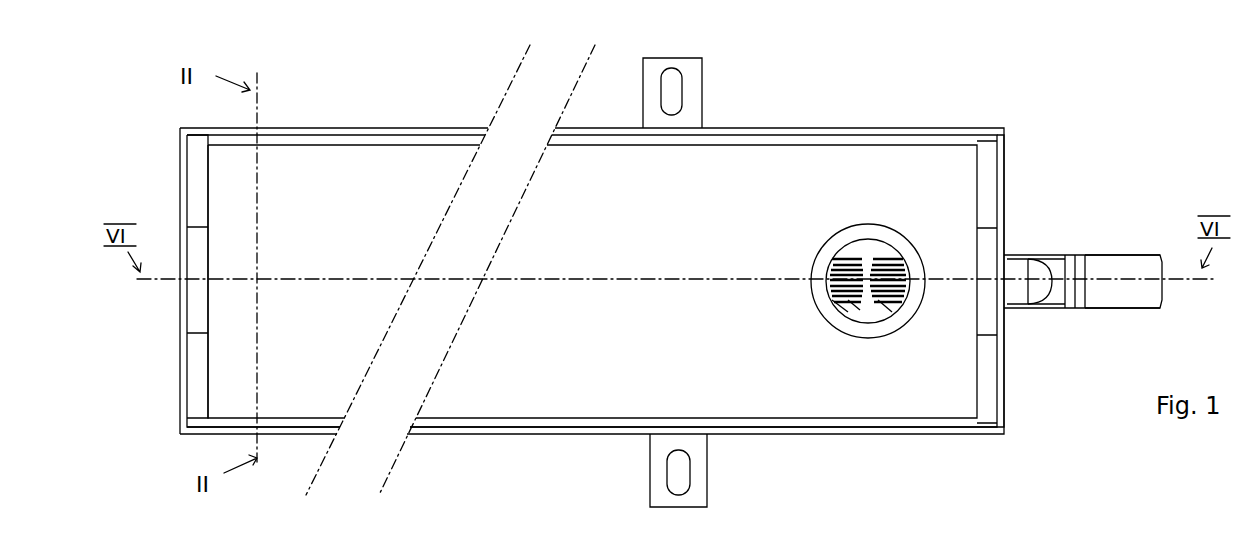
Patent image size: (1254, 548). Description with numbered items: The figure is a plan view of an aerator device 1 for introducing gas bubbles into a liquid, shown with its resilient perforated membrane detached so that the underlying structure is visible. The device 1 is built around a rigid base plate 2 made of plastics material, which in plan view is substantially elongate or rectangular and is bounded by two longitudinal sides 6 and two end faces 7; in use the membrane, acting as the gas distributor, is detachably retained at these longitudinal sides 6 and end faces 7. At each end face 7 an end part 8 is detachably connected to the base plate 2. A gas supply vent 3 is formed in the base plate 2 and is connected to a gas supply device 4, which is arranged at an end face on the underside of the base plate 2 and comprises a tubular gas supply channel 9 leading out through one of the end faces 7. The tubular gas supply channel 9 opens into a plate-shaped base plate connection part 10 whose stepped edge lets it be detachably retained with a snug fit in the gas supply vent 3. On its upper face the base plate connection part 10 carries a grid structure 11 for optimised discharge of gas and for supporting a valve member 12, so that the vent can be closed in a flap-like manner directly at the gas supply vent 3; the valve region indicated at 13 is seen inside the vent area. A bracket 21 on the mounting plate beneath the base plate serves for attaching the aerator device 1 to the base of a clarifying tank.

The aerator device 1 is at (1040, 106).
The base plate 2 is at (652, 221).
The gas supply vent 3 is at (866, 323).
The gas supply device 4 is at (1075, 329).
The longitudinal sides 6 is at (491, 436).
The end faces 7 is at (1004, 206).
The end part 8 is at (197, 361).
The tubular gas supply channel 9 is at (1127, 303).
The base plate connection part 10 is at (884, 308).
The grid structure 11 is at (851, 304).
The valve member 12 is at (830, 318).
The outlet 13 is at (871, 232).
The bracket 21 is at (657, 470).